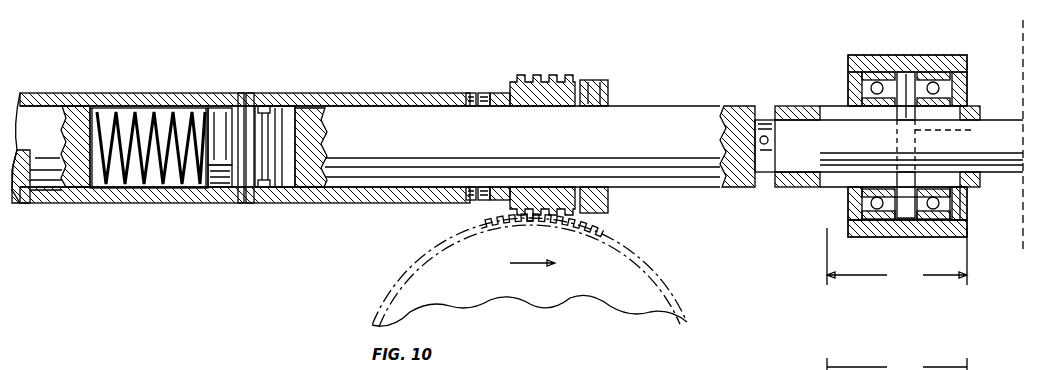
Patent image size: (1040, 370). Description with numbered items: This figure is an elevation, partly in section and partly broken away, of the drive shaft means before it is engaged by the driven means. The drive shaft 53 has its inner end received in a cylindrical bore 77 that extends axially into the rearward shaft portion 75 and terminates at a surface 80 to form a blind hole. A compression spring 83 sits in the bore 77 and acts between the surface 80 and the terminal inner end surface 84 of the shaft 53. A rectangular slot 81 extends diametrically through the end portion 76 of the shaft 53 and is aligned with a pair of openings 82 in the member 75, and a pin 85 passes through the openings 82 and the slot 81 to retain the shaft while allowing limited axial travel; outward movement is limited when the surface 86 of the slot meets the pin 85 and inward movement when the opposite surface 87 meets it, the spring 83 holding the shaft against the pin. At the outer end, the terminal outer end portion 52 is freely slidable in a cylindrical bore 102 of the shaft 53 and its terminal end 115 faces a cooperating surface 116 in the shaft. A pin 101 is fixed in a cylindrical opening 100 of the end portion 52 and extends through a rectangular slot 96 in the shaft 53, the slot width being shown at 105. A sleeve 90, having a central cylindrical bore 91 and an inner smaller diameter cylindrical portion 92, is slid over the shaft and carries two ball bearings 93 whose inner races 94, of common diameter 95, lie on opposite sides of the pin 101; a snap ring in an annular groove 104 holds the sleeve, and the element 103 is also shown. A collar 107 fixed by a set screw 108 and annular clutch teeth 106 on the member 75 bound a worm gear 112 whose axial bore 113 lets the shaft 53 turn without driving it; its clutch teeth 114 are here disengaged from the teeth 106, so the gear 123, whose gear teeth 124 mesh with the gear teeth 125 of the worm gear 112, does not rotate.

The terminal outer end portion 52 is at (1010, 118).
The drive shaft 53 is at (655, 112).
The rearward shaft portion 75 is at (416, 100).
The end portion 76 is at (218, 188).
The cylindrical bore 77 is at (343, 108).
The surface 80 is at (106, 108).
The rectangular slot 81 is at (283, 110).
The openings 82 is at (265, 100).
The compression spring 83 is at (150, 118).
The terminal inner end surface 84 is at (205, 185).
The pin 85 is at (250, 196).
The surface 86 is at (243, 108).
The surface 87 is at (310, 152).
The sleeve 90 is at (925, 58).
The central cylindrical bore 91 is at (905, 237).
The inner smaller diameter cylindrical portion 92 is at (855, 196).
The ball bearings 93 is at (886, 236).
The inner races 94 is at (875, 190).
The inner race diameter 95 is at (935, 122).
The rectangular slot 96 is at (817, 108).
The cylindrical opening 100 is at (899, 146).
The pin 101 is at (905, 76).
The cylindrical bore 102 is at (748, 172).
The bearing retainer 103 is at (962, 207).
The annular groove 104 is at (962, 222).
The width of rectangular slot 105 is at (897, 299).
The clutch teeth 106 is at (472, 92).
The collar 107 is at (610, 200).
The set screw 108 is at (595, 82).
The worm gear 112 is at (548, 76).
The axial bore 113 is at (527, 108).
The clutch teeth 114 is at (486, 92).
The terminal end 115 is at (765, 120).
The cooperating surface 116 is at (757, 150).
The gear 123 is at (672, 292).
The gear teeth 124 is at (498, 223).
The gear teeth 125 is at (542, 222).